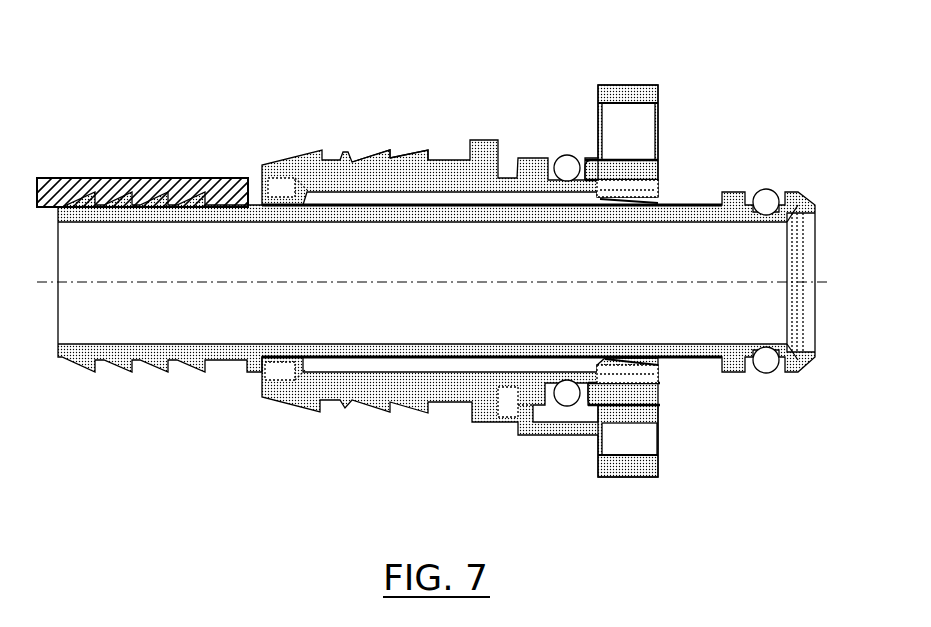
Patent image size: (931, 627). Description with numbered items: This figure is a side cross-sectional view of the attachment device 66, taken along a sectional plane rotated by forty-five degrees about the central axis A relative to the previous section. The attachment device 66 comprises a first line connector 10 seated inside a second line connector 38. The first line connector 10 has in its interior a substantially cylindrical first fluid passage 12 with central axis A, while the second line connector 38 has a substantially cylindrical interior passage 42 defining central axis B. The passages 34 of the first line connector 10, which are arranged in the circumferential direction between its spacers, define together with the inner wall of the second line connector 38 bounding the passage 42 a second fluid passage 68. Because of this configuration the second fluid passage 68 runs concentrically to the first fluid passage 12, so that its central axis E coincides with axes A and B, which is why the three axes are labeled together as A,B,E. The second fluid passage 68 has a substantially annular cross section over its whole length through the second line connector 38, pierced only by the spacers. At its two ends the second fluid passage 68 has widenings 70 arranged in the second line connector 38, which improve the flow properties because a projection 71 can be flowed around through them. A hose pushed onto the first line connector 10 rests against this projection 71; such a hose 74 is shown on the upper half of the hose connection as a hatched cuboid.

The first line connector 10 is at (138, 387).
The first fluid passage 12 is at (520, 245).
The passages 34 is at (335, 202).
The second line connector 38 is at (270, 412).
The passage 42 is at (387, 190).
The attachment device 66 is at (740, 92).
The second fluid passage 68 is at (447, 193).
The widenings 70 is at (270, 188).
The projection 71 is at (240, 180).
The inner hose 74 is at (125, 182).
The central axes A,B,E is at (772, 275).